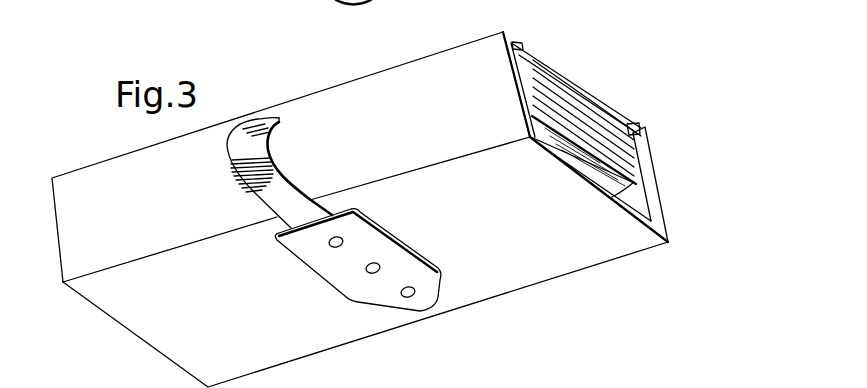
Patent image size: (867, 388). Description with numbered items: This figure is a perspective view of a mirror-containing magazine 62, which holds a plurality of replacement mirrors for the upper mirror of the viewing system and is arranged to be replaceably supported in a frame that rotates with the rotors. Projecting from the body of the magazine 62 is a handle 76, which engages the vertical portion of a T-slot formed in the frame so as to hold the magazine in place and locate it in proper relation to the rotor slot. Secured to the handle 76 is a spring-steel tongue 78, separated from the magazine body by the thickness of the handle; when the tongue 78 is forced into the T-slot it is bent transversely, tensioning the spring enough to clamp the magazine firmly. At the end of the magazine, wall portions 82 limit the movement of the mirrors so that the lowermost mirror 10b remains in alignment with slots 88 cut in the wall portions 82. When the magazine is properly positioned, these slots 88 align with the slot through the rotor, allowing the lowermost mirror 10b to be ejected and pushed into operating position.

The magazine 62 is at (570, 272).
The handle 76 is at (288, 178).
The spring-steel tongue 78 is at (440, 280).
The wall portions 82 is at (530, 90).
The lowermost mirror 10b is at (582, 98).
The slots 88 is at (519, 45).